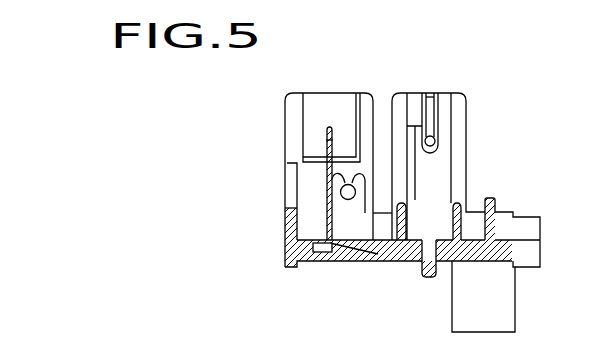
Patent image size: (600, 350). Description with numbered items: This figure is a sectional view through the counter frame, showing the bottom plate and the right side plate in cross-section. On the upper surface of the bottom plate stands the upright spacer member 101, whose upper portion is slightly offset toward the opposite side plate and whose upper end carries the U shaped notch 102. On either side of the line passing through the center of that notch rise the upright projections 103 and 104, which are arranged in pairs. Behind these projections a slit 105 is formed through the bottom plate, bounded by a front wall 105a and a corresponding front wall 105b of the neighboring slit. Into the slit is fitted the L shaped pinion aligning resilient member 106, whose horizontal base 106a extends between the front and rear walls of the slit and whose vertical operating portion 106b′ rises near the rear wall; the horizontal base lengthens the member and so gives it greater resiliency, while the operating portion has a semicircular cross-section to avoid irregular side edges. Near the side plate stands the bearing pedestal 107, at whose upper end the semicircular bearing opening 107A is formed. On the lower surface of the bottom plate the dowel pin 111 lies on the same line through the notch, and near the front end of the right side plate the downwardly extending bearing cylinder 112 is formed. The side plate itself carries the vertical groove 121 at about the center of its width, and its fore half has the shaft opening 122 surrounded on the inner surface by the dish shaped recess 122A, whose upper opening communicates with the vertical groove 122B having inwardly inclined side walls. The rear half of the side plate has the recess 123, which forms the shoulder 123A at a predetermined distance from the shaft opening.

The spacer member 101 is at (437, 187).
The U shaped notch 102 is at (440, 160).
The upright projection 103 is at (400, 222).
The upright projection 104 is at (463, 222).
The slit 105 is at (314, 262).
The front wall 105a is at (291, 250).
The front wall 105b is at (374, 262).
The pinion aligning resilient member 106 is at (327, 215).
The horizontal base 106a is at (322, 246).
The vertical operating portion 106b′ is at (326, 140).
The bearing pedestal 107 is at (343, 204).
The semicircular bearing opening 107A is at (340, 174).
The dowel pin 111 is at (432, 277).
The bearing cylinder 112 is at (517, 303).
The vertical groove 121 is at (383, 103).
The shaft opening 122 is at (432, 141).
The dish shaped recess 122A is at (434, 115).
The vertical groove 122B is at (428, 105).
The recess 123 is at (323, 105).
The shoulder 123A is at (356, 105).